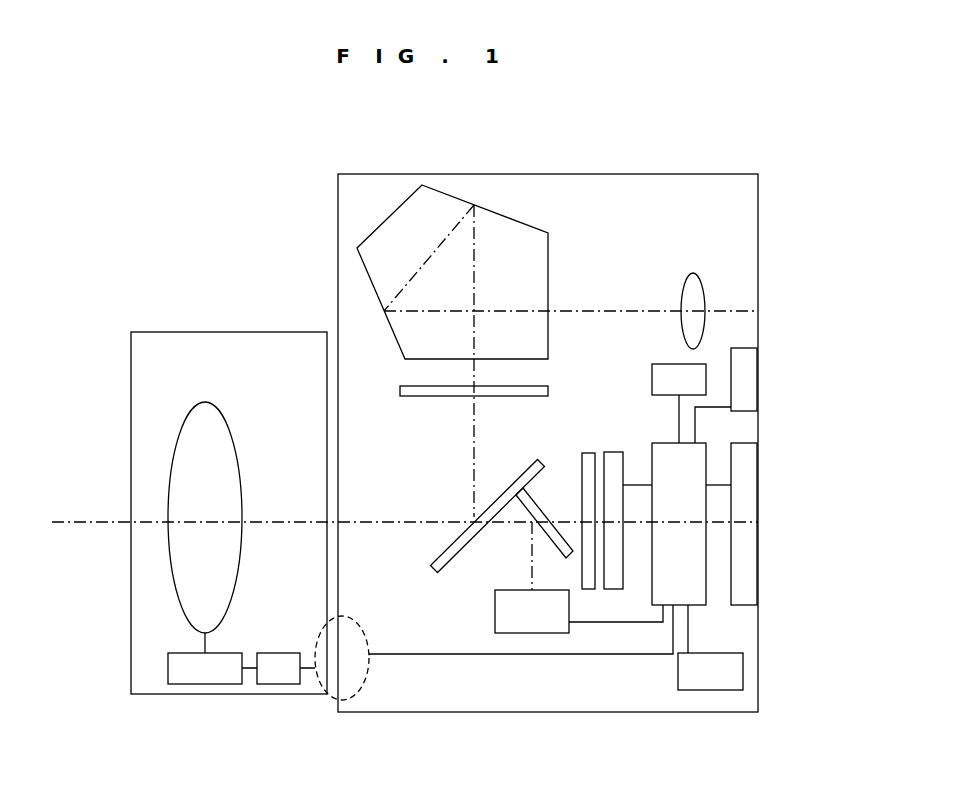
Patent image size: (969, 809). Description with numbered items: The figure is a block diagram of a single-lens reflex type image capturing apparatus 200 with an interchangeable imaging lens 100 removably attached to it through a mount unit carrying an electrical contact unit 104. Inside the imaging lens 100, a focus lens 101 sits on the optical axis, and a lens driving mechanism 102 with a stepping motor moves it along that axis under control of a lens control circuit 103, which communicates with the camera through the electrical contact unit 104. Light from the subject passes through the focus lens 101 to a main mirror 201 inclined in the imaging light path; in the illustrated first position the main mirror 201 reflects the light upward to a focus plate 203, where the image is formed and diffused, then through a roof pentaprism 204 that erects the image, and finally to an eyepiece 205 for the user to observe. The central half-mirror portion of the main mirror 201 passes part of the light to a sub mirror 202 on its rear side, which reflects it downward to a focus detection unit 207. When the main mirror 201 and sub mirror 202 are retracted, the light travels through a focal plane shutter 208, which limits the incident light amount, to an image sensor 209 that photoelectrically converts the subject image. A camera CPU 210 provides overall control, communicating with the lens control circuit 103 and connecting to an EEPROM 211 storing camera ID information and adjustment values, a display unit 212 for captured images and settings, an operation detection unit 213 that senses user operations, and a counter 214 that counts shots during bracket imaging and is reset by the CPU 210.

The imaging lens 100 is at (158, 332).
The focus lens 101 is at (205, 402).
The lens driving mechanism 102 is at (180, 685).
The lens control circuit 103 is at (277, 685).
The electrical contact unit 104 is at (348, 703).
The image capturing apparatus 200 is at (620, 174).
The main mirror 201 is at (432, 571).
The sub mirror 202 is at (524, 512).
The focus plate 203 is at (415, 397).
The roof pentaprism 204 is at (531, 226).
The eyepiece 205 is at (705, 290).
The focus detection unit 207 is at (518, 634).
The focal plane shutter 208 is at (584, 452).
The image sensor 209 is at (612, 452).
The camera CPU 210 is at (695, 607).
The EEPROM 211 is at (744, 672).
The display unit 212 is at (748, 531).
The operation detection unit 213 is at (748, 378).
The counter 214 is at (700, 364).